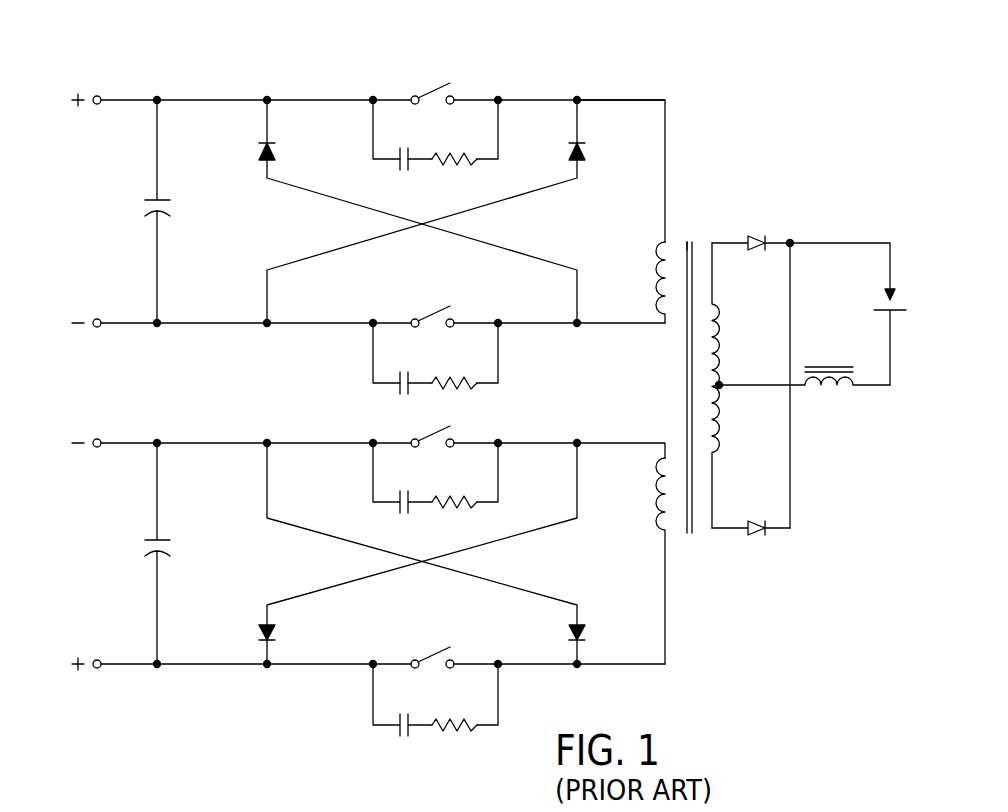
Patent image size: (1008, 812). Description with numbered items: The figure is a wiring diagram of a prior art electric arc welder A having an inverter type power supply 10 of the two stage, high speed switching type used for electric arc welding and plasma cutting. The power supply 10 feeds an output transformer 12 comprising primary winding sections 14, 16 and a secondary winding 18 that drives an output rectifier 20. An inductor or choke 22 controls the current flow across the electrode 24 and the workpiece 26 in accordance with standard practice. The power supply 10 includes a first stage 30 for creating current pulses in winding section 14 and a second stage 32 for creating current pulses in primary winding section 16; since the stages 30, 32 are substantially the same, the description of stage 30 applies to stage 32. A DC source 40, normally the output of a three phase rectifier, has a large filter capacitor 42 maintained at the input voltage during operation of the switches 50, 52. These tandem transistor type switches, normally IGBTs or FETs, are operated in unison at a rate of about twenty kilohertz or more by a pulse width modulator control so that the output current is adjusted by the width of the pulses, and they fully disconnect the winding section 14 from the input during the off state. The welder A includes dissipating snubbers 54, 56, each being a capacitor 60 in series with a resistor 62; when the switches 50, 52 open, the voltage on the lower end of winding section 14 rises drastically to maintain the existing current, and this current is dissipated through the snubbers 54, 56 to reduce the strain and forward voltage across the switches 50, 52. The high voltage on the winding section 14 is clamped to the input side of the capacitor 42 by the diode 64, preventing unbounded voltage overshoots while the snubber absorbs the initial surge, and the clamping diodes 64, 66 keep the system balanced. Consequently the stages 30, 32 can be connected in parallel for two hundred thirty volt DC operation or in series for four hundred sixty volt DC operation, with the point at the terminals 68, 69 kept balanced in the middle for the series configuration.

The inverter type power supply 10 is at (604, 78).
The output transformer 12 is at (701, 216).
The primary winding section 14 is at (656, 268).
The primary winding section 16 is at (656, 498).
The secondary winding 18 is at (721, 415).
The output rectifier 20 is at (763, 226).
The inductor or choke 22 is at (833, 397).
The electrode 24 is at (884, 296).
The workpiece 26 is at (880, 312).
The first stage 30 is at (208, 88).
The second stage 32 is at (216, 684).
The DC source 40 is at (104, 95).
The filter capacitor 42 is at (170, 207).
The switch 50 is at (433, 90).
The switch 52 is at (441, 312).
The dissipating snubber 54 is at (432, 167).
The dissipating snubber 56 is at (464, 379).
The capacitor 60 is at (404, 149).
The resistor 62 is at (453, 372).
The diode 64 is at (258, 153).
The clamping diode 66 is at (582, 152).
The terminal 68 is at (108, 326).
The terminal 69 is at (112, 440).
The electric arc welder A is at (712, 96).